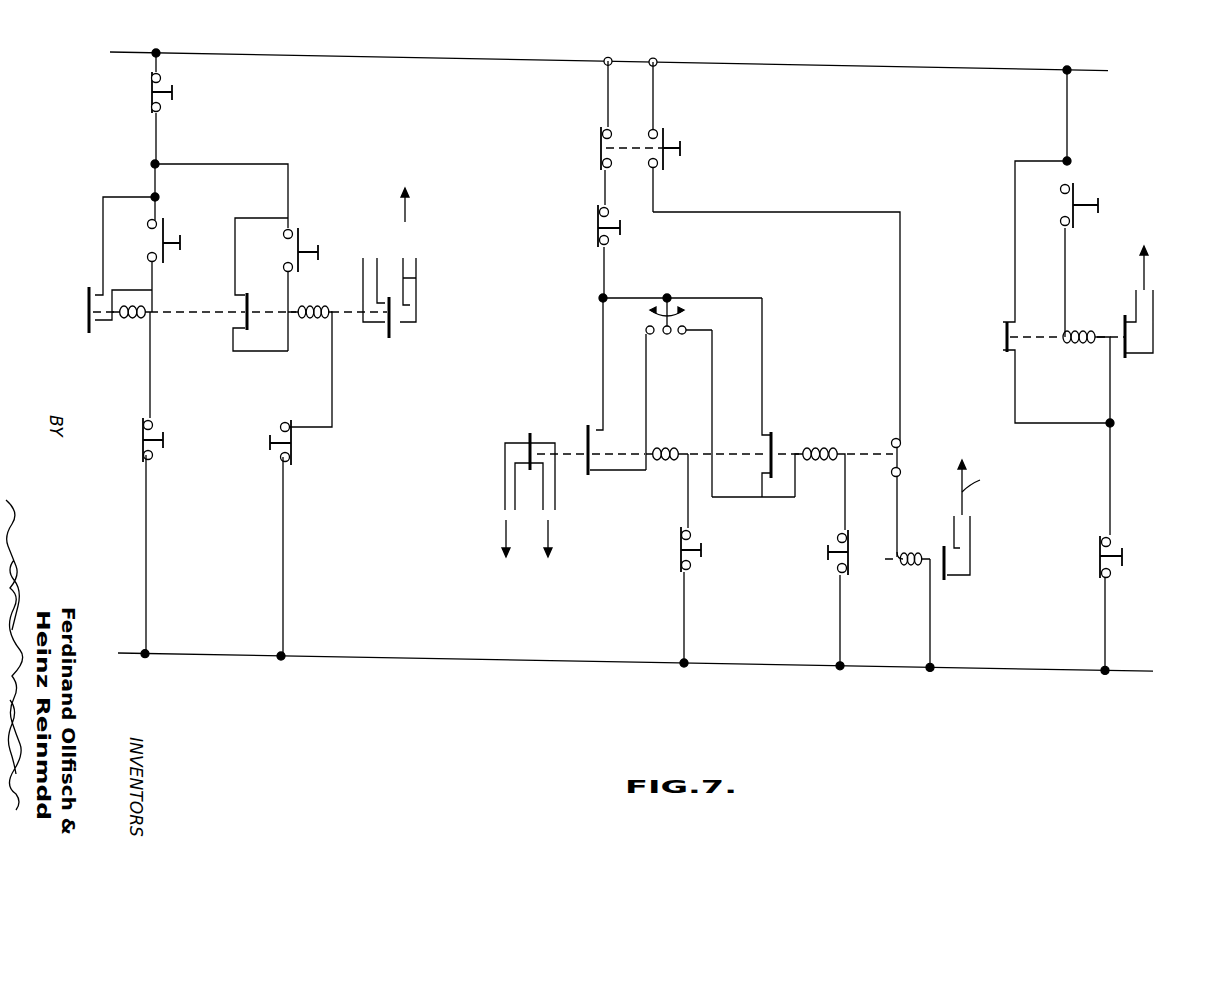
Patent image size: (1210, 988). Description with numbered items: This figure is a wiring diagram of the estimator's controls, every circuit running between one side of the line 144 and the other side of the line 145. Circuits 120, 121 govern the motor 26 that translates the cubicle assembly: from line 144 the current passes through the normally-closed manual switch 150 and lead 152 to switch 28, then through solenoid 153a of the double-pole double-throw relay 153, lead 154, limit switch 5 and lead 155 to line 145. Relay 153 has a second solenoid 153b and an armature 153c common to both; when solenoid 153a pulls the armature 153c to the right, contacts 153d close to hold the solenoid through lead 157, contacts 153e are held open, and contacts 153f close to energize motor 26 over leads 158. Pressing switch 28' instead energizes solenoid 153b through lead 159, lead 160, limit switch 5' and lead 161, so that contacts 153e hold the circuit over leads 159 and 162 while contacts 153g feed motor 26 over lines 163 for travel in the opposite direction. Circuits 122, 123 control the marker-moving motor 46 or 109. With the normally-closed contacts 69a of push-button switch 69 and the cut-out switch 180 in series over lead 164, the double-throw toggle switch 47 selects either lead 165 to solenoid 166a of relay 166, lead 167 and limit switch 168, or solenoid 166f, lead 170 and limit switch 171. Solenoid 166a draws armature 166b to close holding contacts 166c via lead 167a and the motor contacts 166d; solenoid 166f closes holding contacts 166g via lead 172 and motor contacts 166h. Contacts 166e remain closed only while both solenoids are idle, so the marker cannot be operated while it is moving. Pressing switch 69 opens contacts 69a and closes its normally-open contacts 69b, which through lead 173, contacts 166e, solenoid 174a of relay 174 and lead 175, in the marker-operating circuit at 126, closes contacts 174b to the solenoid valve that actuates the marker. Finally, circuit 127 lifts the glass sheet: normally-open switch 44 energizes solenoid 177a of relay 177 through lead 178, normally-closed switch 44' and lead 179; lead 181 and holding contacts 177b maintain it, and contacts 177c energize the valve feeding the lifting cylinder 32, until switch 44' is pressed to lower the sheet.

The line 144 is at (135, 52).
The line 145 is at (137, 652).
The manual switch 150 is at (152, 93).
The lead 152 is at (154, 174).
The lead 157 is at (103, 221).
The lead 159 is at (238, 164).
The switch 28 is at (170, 254).
The lead 162 is at (235, 233).
The switch 28' is at (309, 238).
The lines 163 is at (363, 258).
The relay contacts 153g is at (390, 258).
The leads 158 is at (416, 270).
The relay contacts 153f is at (396, 308).
The relay contacts 153d is at (95, 290).
The armature 153c is at (172, 310).
The relay 153 is at (88, 324).
The solenoid 153a is at (133, 322).
The lead 154 is at (151, 345).
The relay contacts 153e is at (236, 350).
The solenoid 153b is at (315, 321).
The limit switch 5 is at (137, 445).
The limit switch 5' is at (271, 449).
The lead 160 is at (316, 430).
The lead 155 is at (145, 553).
The lead 161 is at (283, 600).
The circuit 120 is at (145, 656).
The circuit 121 is at (281, 658).
The circuit 122 is at (684, 666).
The circuit 123 is at (840, 668).
The terminal 126 is at (930, 670).
The circuit 127 is at (1103, 672).
The motor 26 is at (399, 193).
The cylinder (connection) 32 is at (1152, 257).
The marker-moving motor 46 is at (521, 553).
The marker-moving motor 109 is at (548, 538).
The switch contacts 69a is at (600, 136).
The switch 69 is at (668, 142).
The switch contacts 69b is at (660, 168).
The lead 164 is at (604, 197).
The cut-out switch 180 is at (598, 240).
The toggle switch 47 is at (672, 298).
The lead 173 is at (833, 212).
The lead 167a is at (602, 360).
The lead 165 is at (649, 360).
The relay contacts 166c is at (598, 425).
The lead 172 is at (764, 331).
The relay contacts 166h is at (505, 451).
The relay contact 166d is at (540, 468).
The relay 166 is at (625, 473).
The solenoid 166a is at (673, 464).
The lead 167 is at (688, 522).
The relay contacts 166g is at (761, 497).
The solenoid 166f is at (825, 452).
The armature 166b is at (865, 452).
The relay contacts 166e is at (898, 454).
The lead 170 is at (845, 505).
The limit switch 168 is at (681, 562).
The limit switch 171 is at (836, 570).
The solenoid 174a is at (905, 570).
The relay 174 is at (934, 578).
The relay contacts 174b is at (958, 563).
The lead 175 is at (930, 645).
The switch 44 is at (1093, 203).
The lead 181 is at (1015, 230).
The holding contacts 177b is at (1015, 322).
The solenoid 177a is at (1078, 335).
The relay 177 is at (1005, 354).
The relay contacts 177c is at (1130, 348).
The lead 178 is at (1110, 458).
The switch 44' is at (1132, 565).
The lead 179 is at (1107, 623).